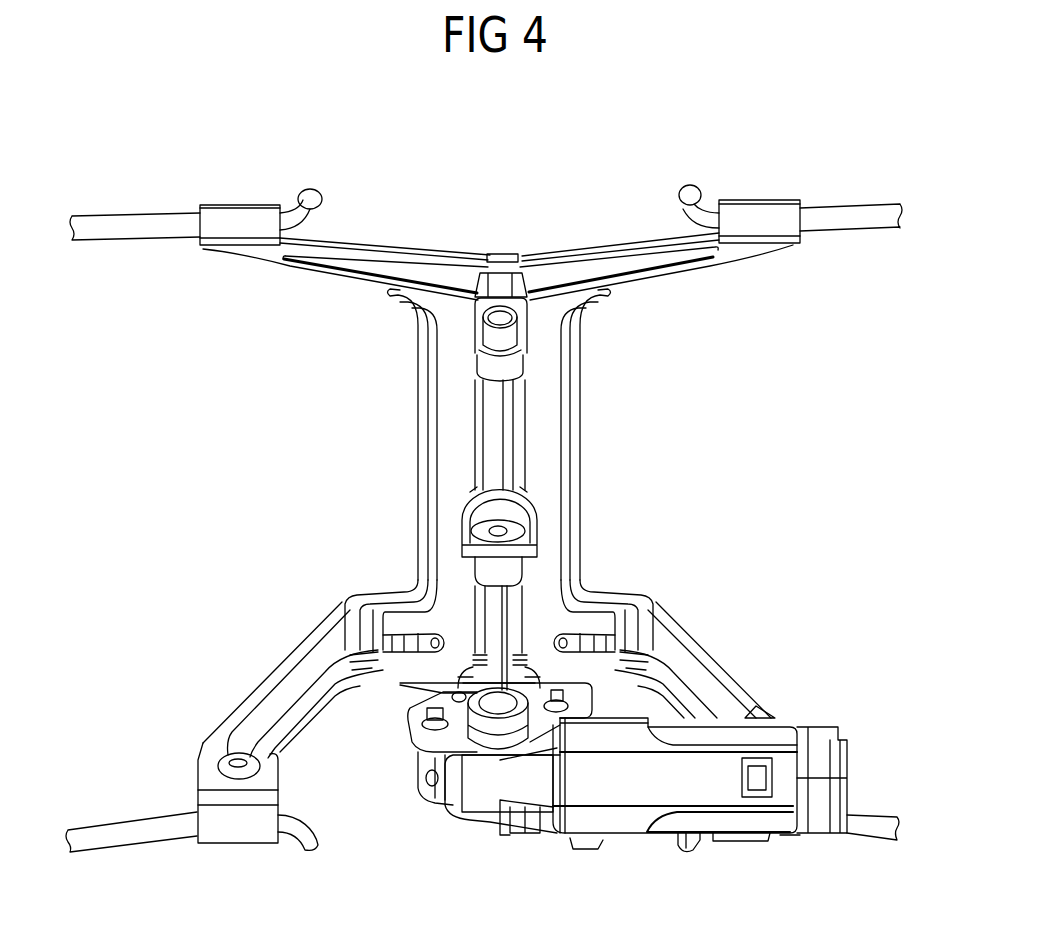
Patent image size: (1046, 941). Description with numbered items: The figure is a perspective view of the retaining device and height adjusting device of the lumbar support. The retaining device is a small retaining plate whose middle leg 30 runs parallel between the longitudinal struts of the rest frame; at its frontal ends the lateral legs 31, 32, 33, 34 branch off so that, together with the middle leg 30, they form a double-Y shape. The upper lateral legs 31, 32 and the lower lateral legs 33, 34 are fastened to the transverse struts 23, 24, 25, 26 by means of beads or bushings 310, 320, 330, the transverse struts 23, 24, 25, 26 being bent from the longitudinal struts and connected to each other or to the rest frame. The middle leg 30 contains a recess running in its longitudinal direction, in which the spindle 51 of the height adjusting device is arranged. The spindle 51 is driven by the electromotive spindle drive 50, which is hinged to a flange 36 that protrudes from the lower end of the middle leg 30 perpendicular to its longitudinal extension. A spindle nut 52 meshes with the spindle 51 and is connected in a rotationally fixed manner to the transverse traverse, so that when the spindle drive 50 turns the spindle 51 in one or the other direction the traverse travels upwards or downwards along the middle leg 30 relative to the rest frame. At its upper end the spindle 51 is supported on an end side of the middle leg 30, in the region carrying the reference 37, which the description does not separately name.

The transverse strut 23 is at (150, 225).
The transverse strut 24 is at (837, 217).
The transverse strut 25 is at (138, 832).
The transverse strut 26 is at (867, 827).
The middle leg 30 is at (548, 428).
The lateral leg 31 is at (355, 265).
The lateral leg 32 is at (643, 260).
The lateral leg 33 is at (285, 677).
The lateral leg 34 is at (668, 637).
The flange 36 is at (432, 730).
The pivot bearing 37 is at (517, 367).
The electromotive spindle drive 50 is at (627, 790).
The spindle 51 is at (490, 458).
The spindle nut 52 is at (512, 568).
The bushing 310 is at (243, 220).
The bushing 320 is at (760, 213).
The bushing 330 is at (242, 828).